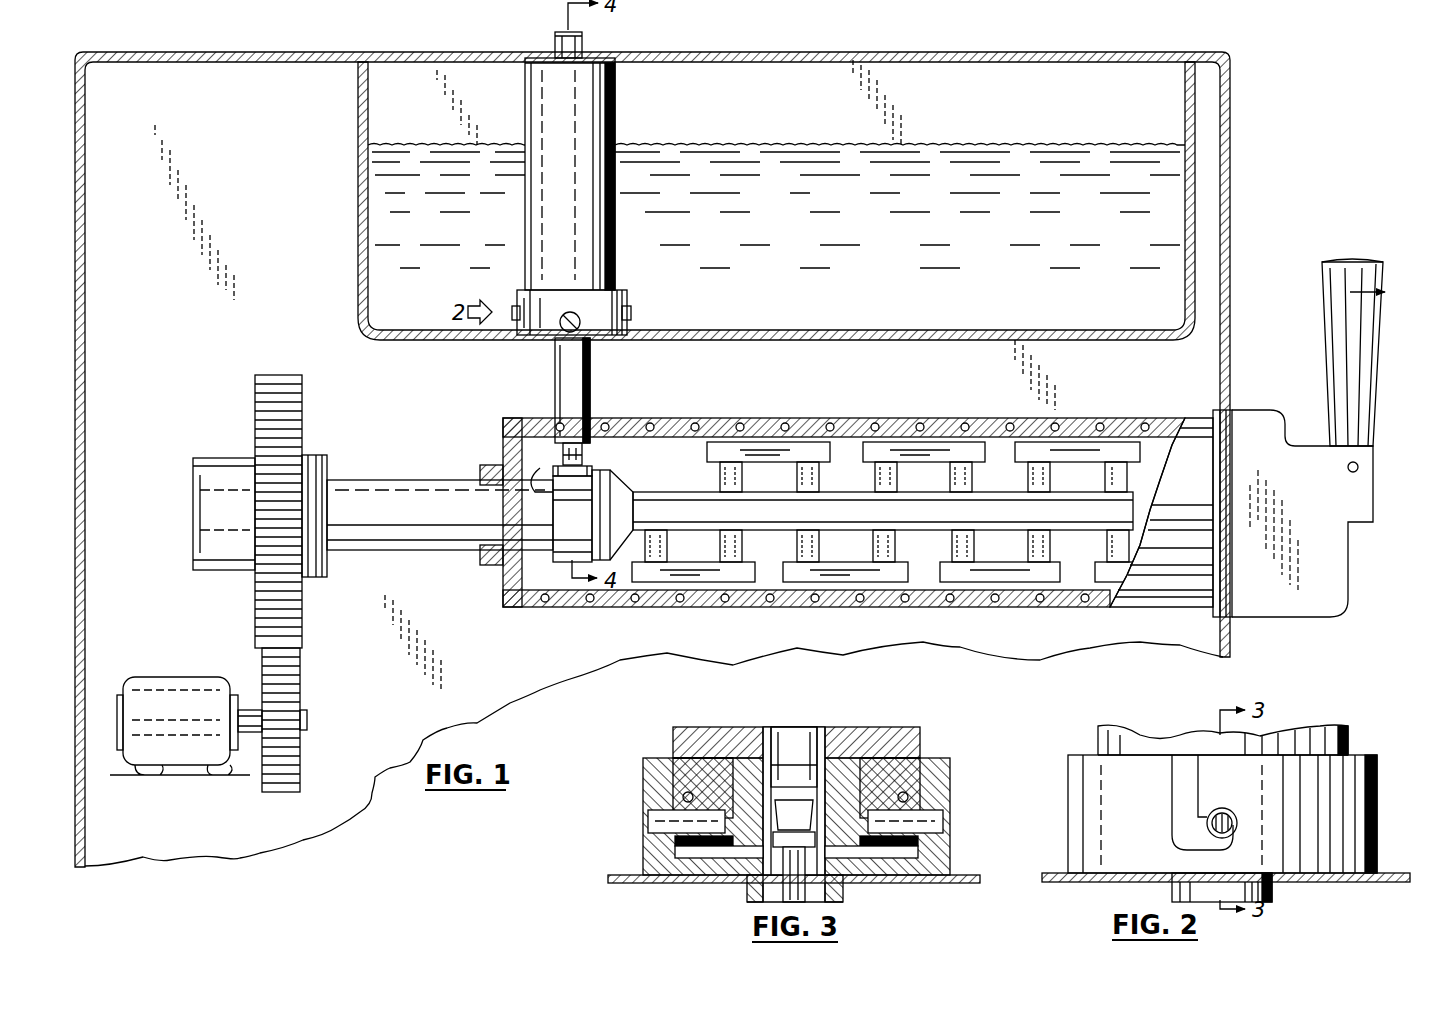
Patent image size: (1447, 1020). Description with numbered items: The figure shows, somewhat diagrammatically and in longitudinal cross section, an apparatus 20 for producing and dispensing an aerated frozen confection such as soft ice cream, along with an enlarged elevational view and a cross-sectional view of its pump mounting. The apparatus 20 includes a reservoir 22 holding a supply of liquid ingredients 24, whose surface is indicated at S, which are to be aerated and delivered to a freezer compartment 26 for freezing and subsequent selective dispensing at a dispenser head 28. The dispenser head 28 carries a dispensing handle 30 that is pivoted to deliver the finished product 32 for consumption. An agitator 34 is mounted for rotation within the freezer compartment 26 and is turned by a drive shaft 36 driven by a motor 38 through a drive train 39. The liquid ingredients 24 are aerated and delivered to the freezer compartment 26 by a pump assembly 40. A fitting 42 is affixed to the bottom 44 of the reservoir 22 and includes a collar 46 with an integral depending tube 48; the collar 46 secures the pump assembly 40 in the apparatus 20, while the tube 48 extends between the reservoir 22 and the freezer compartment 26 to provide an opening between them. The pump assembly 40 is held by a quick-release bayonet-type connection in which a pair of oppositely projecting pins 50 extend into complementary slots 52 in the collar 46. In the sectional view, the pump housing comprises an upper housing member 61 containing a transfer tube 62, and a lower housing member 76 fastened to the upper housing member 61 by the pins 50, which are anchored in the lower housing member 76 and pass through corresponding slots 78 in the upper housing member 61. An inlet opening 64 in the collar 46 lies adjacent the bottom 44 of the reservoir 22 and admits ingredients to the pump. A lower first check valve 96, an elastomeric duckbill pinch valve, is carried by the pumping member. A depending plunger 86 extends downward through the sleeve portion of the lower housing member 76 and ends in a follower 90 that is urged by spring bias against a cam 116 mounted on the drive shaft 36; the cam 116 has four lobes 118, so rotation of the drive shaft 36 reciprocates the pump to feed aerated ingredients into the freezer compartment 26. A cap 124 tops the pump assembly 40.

In FIG. 1, the apparatus 20 is at (1233, 116).
In FIG. 1, the reservoir 22 is at (1190, 198).
In FIG. 1, the liquid ingredients 24 is at (904, 252).
In FIG. 1, the liquid surface S is at (440, 144).
In FIG. 1, the freezer compartment 26 is at (848, 418).
In FIG. 1, the dispenser head 28 is at (1345, 564).
In FIG. 1, the dispensing handle 30 is at (1322, 270).
In FIG. 1, the finished product 32 is at (1303, 628).
In FIG. 1, the agitator 34 is at (938, 442).
In FIG. 1, the drive shaft 36 is at (525, 552).
In FIG. 1, the motor 38 is at (162, 690).
In FIG. 1, the drive train 39 is at (303, 628).
In FIG. 1, the pump assembly 40 is at (617, 92).
In FIG. 2, the pump assembly 40 is at (1348, 732).
In FIG. 3, the pump assembly 40 is at (921, 734).
In FIG. 1, the fitting 42 is at (630, 292).
In FIG. 2, the fitting 42 is at (1377, 756).
In FIG. 3, the fitting 42 is at (950, 756).
In FIG. 1, the bottom 44 is at (693, 330).
In FIG. 2, the bottom 44 is at (1385, 872).
In FIG. 3, the bottom 44 is at (625, 876).
In FIG. 1, the collar 46 is at (572, 290).
In FIG. 2, the collar 46 is at (1372, 784).
In FIG. 3, the collar 46 is at (950, 776).
In FIG. 1, the tube 48 is at (590, 362).
In FIG. 2, the tube 48 is at (1275, 894).
In FIG. 3, the tube 48 is at (748, 894).
In FIG. 1, the pins 50 is at (512, 312).
In FIG. 2, the pins 50 is at (1232, 810).
In FIG. 3, the pins 50 is at (648, 820).
In FIG. 2, the slots 52 is at (1198, 798).
In FIG. 3, the slots 52 is at (675, 850).
In FIG. 3, the upper housing member 61 is at (880, 745).
In FIG. 3, the transfer tube 62 is at (840, 740).
In FIG. 1, the inlet opening 64 is at (560, 318).
In FIG. 3, the lower housing member 76 is at (855, 860).
In FIG. 3, the slots 78 is at (686, 792).
In FIG. 1, the plunger 86 is at (562, 456).
In FIG. 1, the follower 90 is at (556, 480).
In FIG. 3, the first check valve 96 is at (782, 738).
In FIG. 1, the cam 116 is at (582, 468).
In FIG. 1, the lobes 118 is at (538, 478).
In FIG. 1, the cap 124 is at (552, 36).